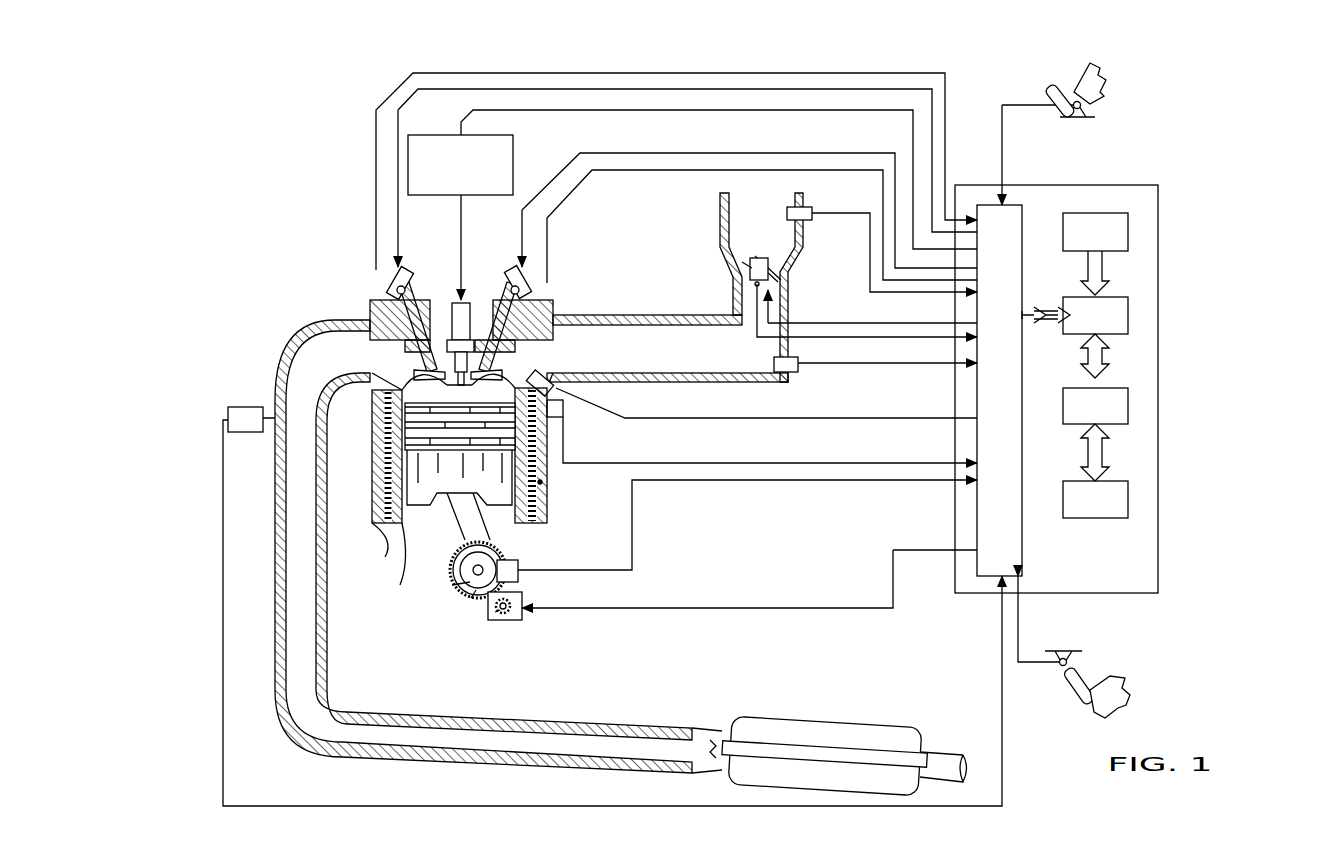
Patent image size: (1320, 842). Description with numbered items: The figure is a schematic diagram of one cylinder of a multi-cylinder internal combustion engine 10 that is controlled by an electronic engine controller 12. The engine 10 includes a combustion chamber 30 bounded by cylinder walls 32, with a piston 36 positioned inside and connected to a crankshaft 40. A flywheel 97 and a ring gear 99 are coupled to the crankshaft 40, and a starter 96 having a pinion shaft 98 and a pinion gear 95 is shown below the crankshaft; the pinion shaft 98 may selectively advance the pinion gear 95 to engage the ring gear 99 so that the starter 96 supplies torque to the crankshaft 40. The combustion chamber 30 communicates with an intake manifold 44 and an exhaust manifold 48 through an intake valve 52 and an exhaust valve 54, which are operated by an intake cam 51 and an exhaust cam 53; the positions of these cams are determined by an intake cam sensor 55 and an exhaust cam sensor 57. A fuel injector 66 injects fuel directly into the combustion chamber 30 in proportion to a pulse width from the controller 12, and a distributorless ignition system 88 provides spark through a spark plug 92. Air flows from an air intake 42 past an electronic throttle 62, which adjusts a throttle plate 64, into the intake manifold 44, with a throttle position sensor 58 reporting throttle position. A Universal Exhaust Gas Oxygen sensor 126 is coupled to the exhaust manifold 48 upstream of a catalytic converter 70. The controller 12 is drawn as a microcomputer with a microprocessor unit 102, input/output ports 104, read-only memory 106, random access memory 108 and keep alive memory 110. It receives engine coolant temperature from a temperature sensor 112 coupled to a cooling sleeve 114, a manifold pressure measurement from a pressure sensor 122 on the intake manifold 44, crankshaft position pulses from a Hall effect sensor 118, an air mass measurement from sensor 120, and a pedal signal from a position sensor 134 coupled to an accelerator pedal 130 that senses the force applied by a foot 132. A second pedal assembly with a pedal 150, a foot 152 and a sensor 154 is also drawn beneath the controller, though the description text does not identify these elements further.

The internal combustion engine 10 is at (318, 258).
The electronic engine controller 12 is at (1152, 185).
The combustion chamber 30 is at (393, 473).
The cylinder walls 32 is at (407, 525).
The piston 36 is at (442, 510).
The crankshaft 40 is at (460, 590).
The air intake 42 is at (747, 239).
The intake manifold 44 is at (689, 361).
The exhaust manifold 48 is at (329, 366).
The intake cam 51 is at (505, 272).
The intake valve 52 is at (500, 378).
The exhaust cam 53 is at (410, 270).
The exhaust valve 54 is at (405, 352).
The intake cam sensor 55 is at (528, 286).
The exhaust cam sensor 57 is at (392, 283).
The throttle position sensor 58 is at (745, 290).
The electronic throttle 62 is at (770, 262).
The throttle plate 64 is at (742, 264).
The fuel injector 66 is at (570, 397).
The catalytic converter 70 is at (745, 722).
The distributorless ignition system 88 is at (420, 135).
The spark plug 92 is at (466, 300).
The pinion gear 95 is at (508, 615).
The starter 96 is at (515, 618).
The flywheel 97 is at (452, 585).
The pinion shaft 98 is at (497, 614).
The ring gear 99 is at (471, 598).
The microprocessor unit 102 is at (1128, 312).
The input/output ports 104 is at (1045, 195).
The read-only memory 106 is at (1128, 225).
The random access memory 108 is at (1128, 402).
The keep alive memory 110 is at (1128, 496).
The temperature sensor 112 is at (570, 415).
The cooling sleeve 114 is at (545, 480).
The Hall effect sensor 118 is at (517, 562).
The air mass sensor 120 is at (800, 207).
The pressure sensor 122 is at (790, 372).
The Universal Exhaust Gas Oxygen sensor 126 is at (228, 412).
The accelerator pedal 130 is at (1060, 84).
The foot 132 is at (1106, 78).
The position sensor 134 is at (1092, 108).
The brake pedal 150 is at (1082, 710).
The foot 152 is at (1118, 678).
The brake pedal sensor 154 is at (1050, 655).